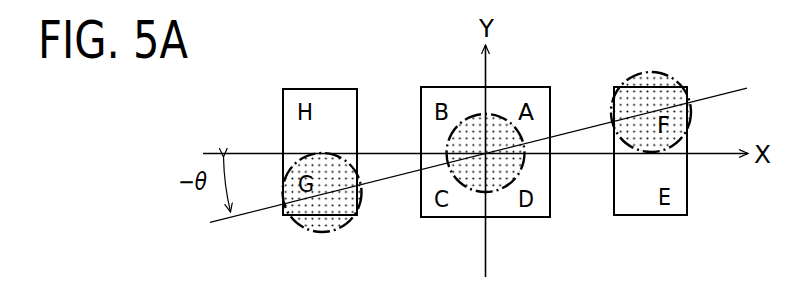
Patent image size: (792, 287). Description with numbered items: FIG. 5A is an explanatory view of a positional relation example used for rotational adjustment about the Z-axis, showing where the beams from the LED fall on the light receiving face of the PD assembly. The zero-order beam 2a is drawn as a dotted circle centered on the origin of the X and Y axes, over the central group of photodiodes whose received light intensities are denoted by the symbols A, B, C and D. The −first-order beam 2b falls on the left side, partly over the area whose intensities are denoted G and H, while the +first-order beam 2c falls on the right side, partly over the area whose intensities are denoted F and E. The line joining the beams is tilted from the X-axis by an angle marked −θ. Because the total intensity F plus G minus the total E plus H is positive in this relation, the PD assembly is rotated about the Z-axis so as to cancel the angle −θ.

The zero-order beam 2a is at (498, 182).
The −first-order beam 2b is at (330, 230).
The +first-order beam 2c is at (657, 72).